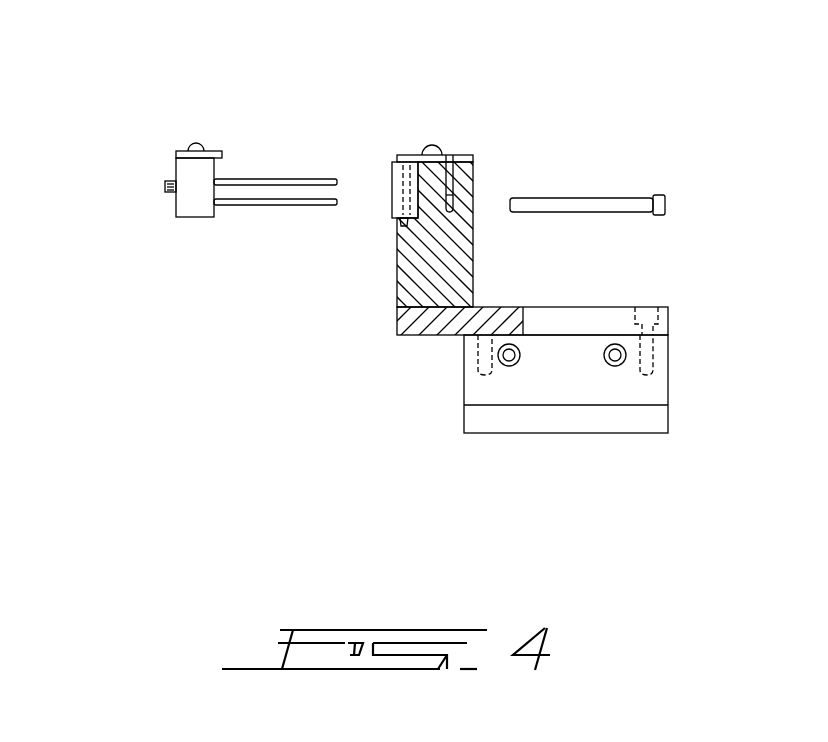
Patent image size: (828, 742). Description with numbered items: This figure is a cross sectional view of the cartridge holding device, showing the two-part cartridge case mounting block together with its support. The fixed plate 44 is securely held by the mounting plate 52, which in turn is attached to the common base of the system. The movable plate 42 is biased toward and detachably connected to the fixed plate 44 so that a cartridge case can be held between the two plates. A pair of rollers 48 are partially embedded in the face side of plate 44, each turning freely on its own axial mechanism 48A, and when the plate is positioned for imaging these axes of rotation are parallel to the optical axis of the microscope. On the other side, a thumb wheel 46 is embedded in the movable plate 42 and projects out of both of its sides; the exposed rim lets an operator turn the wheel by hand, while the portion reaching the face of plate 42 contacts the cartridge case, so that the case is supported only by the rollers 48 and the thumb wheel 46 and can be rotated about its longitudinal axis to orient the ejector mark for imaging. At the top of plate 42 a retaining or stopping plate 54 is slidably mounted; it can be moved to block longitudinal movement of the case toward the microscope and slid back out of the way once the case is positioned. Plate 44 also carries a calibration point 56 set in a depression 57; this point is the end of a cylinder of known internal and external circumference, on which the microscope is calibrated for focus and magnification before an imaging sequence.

The movable plate 42 is at (203, 205).
The fixed plate 44 is at (473, 165).
The thumb wheel 46 is at (163, 187).
The rollers 48 is at (392, 182).
The axial mechanisms 48A is at (400, 228).
The mounting plate 52 is at (578, 307).
The retaining or stopping plate 54 is at (273, 210).
The calibration point 56 is at (454, 156).
The depression 57 is at (460, 154).